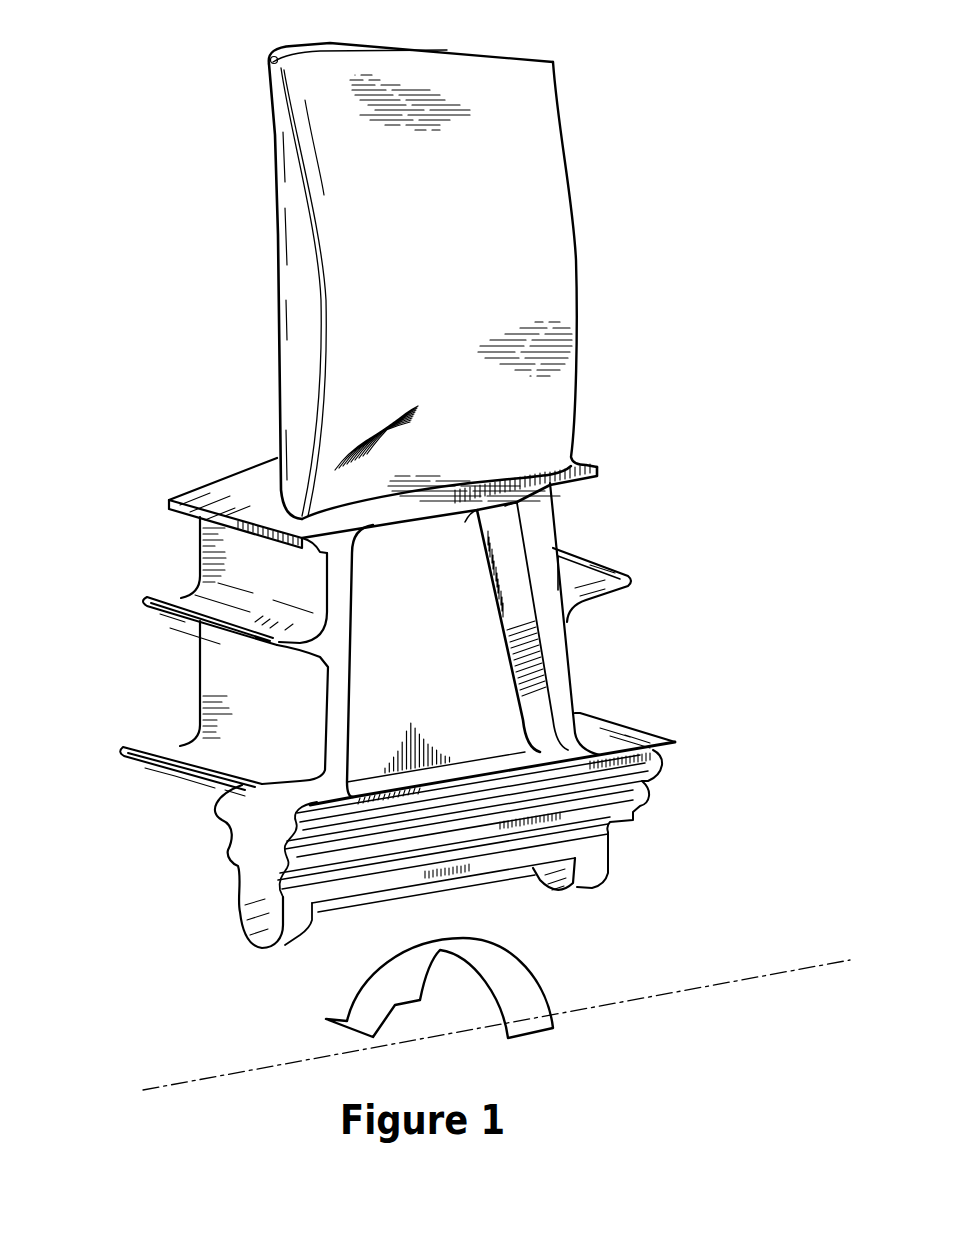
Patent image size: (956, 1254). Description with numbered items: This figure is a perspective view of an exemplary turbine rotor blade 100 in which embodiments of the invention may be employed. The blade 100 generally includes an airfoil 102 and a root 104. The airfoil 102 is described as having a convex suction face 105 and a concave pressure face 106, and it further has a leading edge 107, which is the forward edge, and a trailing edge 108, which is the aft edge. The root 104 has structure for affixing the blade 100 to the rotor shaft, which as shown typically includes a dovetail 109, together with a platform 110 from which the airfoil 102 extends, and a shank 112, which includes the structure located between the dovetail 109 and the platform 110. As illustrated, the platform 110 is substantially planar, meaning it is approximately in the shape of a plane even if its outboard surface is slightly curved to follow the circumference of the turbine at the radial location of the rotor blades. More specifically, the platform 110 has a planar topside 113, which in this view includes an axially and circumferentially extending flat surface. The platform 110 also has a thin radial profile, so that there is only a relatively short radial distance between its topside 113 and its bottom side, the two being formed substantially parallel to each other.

The turbine rotor blade 100 is at (686, 341).
The airfoil 102 is at (532, 152).
The root 104 is at (672, 828).
The convex suction face 105 is at (273, 215).
The concave pressure face 106 is at (468, 329).
The leading edge 107 is at (308, 368).
The trailing edge 108 is at (572, 222).
The dovetail 109 is at (263, 924).
The platform 110 is at (207, 487).
The shank 112 is at (147, 678).
The planar topside 113 is at (275, 508).